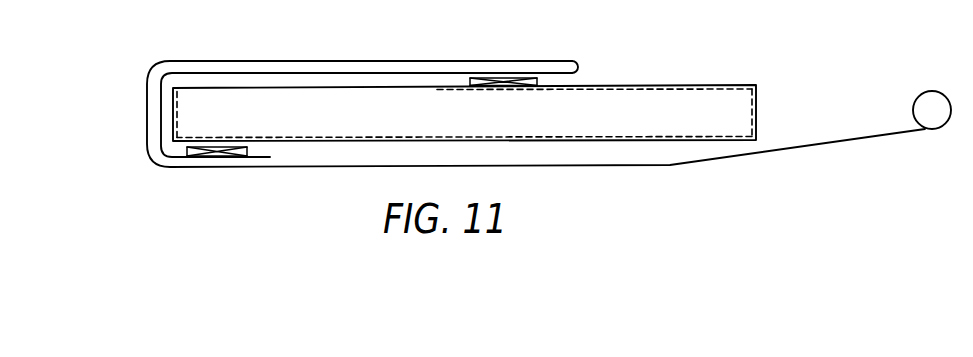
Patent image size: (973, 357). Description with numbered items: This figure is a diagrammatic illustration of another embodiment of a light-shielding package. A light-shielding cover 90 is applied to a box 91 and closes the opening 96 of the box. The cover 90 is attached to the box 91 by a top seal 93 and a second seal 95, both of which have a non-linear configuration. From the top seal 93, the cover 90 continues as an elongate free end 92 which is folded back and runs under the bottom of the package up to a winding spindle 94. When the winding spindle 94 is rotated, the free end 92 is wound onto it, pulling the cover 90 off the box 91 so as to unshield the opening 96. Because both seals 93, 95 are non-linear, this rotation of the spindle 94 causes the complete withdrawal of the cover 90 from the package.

The light-shielding cover 90 is at (258, 76).
The box 91 is at (675, 84).
The elongate free end 92 is at (147, 118).
The top seal 93 is at (501, 78).
The winding spindle 94 is at (921, 105).
The seal 95 is at (220, 157).
The opening 96 is at (356, 92).